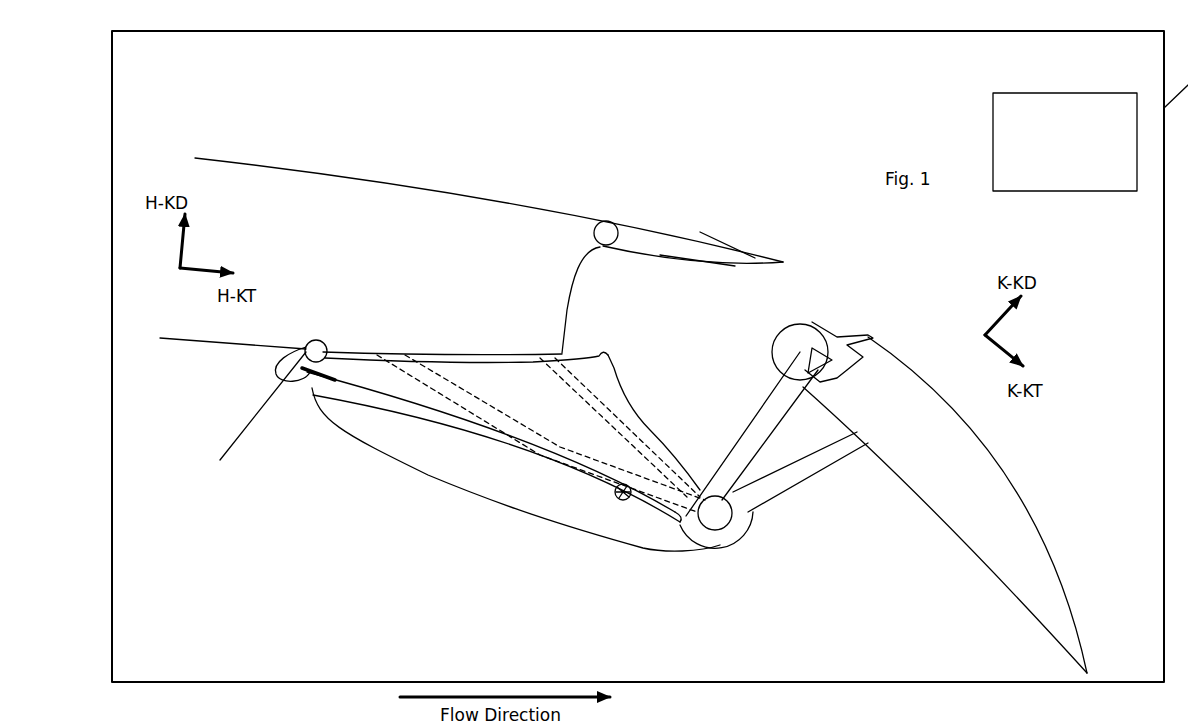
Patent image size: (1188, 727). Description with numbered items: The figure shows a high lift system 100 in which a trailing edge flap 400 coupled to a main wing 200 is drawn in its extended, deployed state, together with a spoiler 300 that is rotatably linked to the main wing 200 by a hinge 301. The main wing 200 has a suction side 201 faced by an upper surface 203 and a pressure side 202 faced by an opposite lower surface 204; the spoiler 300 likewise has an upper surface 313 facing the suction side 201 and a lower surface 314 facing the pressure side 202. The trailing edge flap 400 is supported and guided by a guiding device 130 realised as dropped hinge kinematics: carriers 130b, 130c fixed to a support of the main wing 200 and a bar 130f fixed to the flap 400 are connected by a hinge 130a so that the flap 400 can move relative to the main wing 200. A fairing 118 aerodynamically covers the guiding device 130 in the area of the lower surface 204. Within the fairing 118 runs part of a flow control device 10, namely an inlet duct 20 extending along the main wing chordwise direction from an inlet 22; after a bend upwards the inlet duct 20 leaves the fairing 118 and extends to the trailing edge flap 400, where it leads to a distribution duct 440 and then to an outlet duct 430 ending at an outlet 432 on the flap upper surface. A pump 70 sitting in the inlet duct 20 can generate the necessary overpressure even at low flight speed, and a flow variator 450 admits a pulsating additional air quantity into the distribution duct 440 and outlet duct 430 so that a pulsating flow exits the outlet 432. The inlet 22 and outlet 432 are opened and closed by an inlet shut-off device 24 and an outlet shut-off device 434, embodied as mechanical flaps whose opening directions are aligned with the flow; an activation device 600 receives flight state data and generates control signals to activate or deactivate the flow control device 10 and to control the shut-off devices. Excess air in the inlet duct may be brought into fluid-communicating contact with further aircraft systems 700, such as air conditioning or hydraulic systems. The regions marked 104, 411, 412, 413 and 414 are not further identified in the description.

The flow control device 10 is at (501, 474).
The inlet duct 20 is at (592, 470).
The inlet 22 is at (307, 398).
The inlet shut-off device 24 is at (283, 350).
The pump 70 is at (622, 500).
The high lift system 100 is at (566, 141).
The flow region under flap 104 is at (313, 482).
The fairing 118 is at (526, 505).
The guiding device 130 is at (707, 477).
The hinge 130a is at (716, 525).
The carrier 130b is at (668, 514).
The carrier 130c is at (640, 422).
The bar 130f is at (777, 490).
The main wing 200 is at (463, 256).
The suction side 201 is at (426, 90).
The pressure side 202 is at (174, 423).
The upper surface 203 is at (460, 188).
The lower surface 204 is at (215, 343).
The spoiler 300 is at (694, 244).
The hinge 301 is at (611, 223).
The upper surface 313 is at (726, 243).
The lower surface 314 is at (700, 266).
The trailing edge flap 400 is at (934, 465).
The flap upper side 411 is at (1113, 478).
The flap lower side 412 is at (884, 533).
The flap upper surface 413 is at (988, 443).
The flap lower surface 414 is at (937, 506).
The outlet duct 430 is at (844, 319).
The outlet 432 is at (872, 338).
The outlet shut-off device 434 is at (870, 335).
The distribution duct 440 is at (790, 327).
The flow variator 450 is at (800, 357).
The activation device 600 is at (245, 414).
The further systems 700 is at (1065, 142).